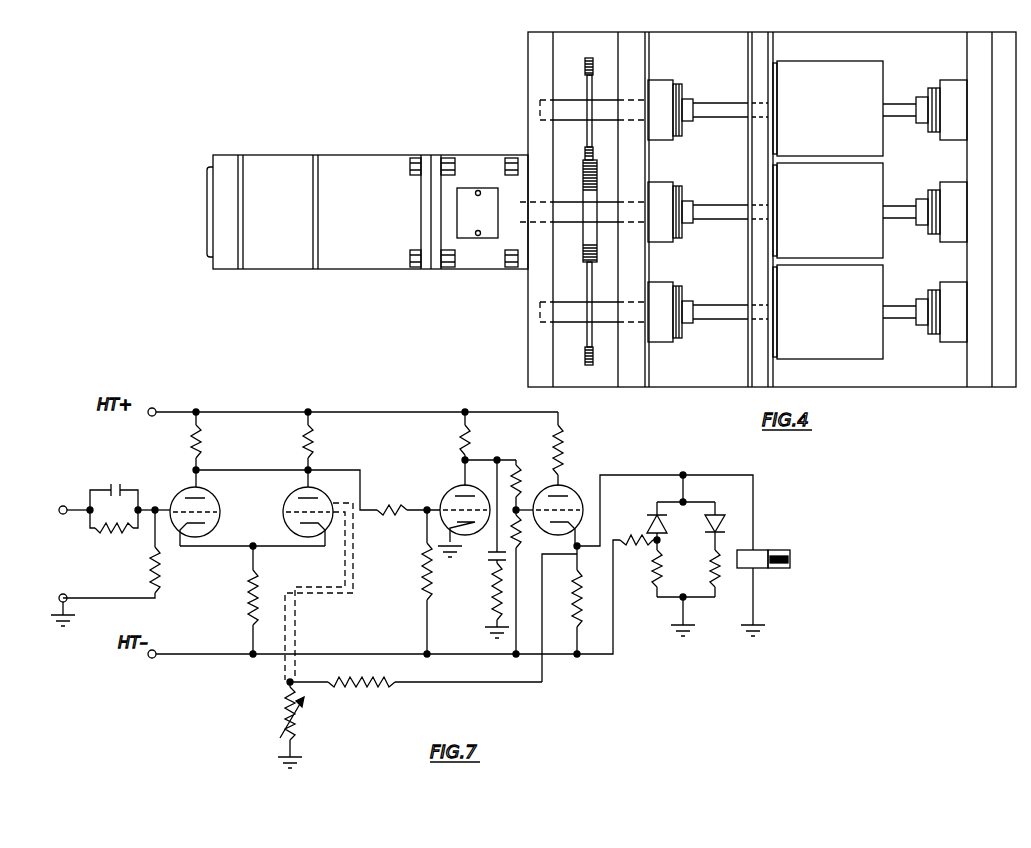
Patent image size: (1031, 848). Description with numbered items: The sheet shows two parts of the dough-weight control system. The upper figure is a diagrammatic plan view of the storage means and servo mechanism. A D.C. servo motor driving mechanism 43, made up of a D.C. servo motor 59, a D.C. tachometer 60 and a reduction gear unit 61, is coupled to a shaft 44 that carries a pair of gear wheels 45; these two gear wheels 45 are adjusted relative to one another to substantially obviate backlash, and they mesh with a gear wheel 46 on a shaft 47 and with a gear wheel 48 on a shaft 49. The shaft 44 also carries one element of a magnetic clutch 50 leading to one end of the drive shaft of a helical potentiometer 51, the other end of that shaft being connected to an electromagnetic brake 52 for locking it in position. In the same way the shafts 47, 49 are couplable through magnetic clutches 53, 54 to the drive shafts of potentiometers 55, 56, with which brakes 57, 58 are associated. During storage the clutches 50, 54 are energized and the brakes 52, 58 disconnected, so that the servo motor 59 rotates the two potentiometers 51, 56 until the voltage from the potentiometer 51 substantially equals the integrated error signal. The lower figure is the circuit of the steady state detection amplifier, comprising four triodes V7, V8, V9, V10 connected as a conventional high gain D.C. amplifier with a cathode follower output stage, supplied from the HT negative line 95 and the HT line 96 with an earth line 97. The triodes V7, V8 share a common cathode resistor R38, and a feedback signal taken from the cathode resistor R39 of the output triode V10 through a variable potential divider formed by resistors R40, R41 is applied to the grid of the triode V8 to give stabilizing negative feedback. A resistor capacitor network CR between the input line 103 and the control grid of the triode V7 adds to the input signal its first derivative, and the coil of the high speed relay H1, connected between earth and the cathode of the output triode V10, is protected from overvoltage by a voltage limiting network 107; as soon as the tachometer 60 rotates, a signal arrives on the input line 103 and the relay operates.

In FIG. 4, the D.C. servo motor driving mechanism 43 is at (350, 162).
In FIG. 4, the shaft 44 is at (567, 217).
In FIG. 4, the pair of gear wheels 45 is at (598, 238).
In FIG. 4, the gear wheel 46 is at (590, 90).
In FIG. 4, the shaft 47 is at (563, 123).
In FIG. 4, the gear wheel 48 is at (593, 366).
In FIG. 4, the shaft 49 is at (568, 328).
In FIG. 4, the magnetic clutch 50 is at (682, 190).
In FIG. 4, the helical potentiometer 51 is at (785, 232).
In FIG. 4, the electromagnetic brake 52 is at (930, 234).
In FIG. 4, the magnetic clutch 53 is at (682, 88).
In FIG. 4, the magnetic clutch 54 is at (679, 341).
In FIG. 4, the potentiometer 55 is at (873, 73).
In FIG. 4, the potentiometer 56 is at (837, 348).
In FIG. 4, the brake 57 is at (930, 78).
In FIG. 4, the brake 58 is at (930, 335).
In FIG. 4, the D.C. servo motor 59 is at (360, 260).
In FIG. 4, the D.C. tachometer 60 is at (270, 260).
In FIG. 4, the reduction gear unit 61 is at (470, 260).
In FIG. 7, the HT negative line 95 is at (200, 655).
In FIG. 7, the HT line 96 is at (277, 412).
In FIG. 7, the earth line 97 is at (90, 601).
In FIG. 7, the input line 103 is at (70, 505).
In FIG. 7, the voltage limiting network 107 is at (697, 592).
In FIG. 7, the resistor capacitor network CR is at (130, 490).
In FIG. 7, the triode V7 is at (220, 500).
In FIG. 7, the triode V8 is at (330, 495).
In FIG. 7, the triode V9 is at (447, 492).
In FIG. 7, the output triode V10 is at (573, 487).
In FIG. 7, the common cathode resistor R38 is at (232, 600).
In FIG. 7, the cathode resistor R39 is at (583, 598).
In FIG. 7, the resistor R40 is at (416, 695).
In FIG. 7, the resistor R41 is at (273, 723).
In FIG. 7, the meter H/1 H1 is at (817, 558).